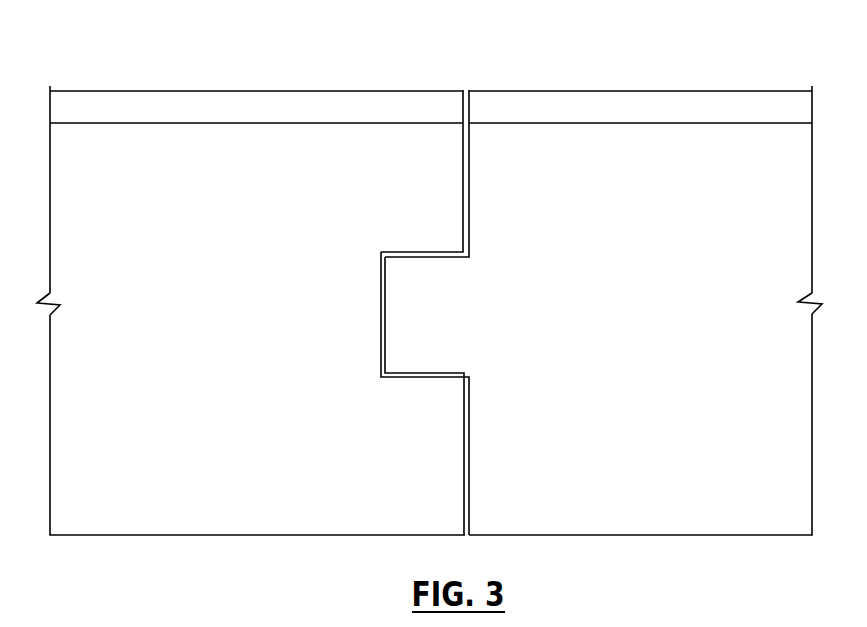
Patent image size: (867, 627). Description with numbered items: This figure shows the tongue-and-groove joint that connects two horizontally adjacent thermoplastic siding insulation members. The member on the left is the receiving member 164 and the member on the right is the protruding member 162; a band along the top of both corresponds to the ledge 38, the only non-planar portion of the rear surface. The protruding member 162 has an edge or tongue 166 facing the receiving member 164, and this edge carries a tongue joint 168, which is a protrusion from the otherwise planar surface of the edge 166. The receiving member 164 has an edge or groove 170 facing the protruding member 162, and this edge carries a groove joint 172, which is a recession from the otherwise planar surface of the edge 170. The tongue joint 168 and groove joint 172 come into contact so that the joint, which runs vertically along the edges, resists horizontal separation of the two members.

The ledge 38 is at (287, 107).
The protruding member 162 is at (619, 158).
The receiving member 164 is at (175, 160).
The edge or tongue 166 is at (469, 197).
The tongue joint 168 is at (443, 318).
The edge or groove 170 is at (463, 179).
The groove joint 172 is at (381, 304).